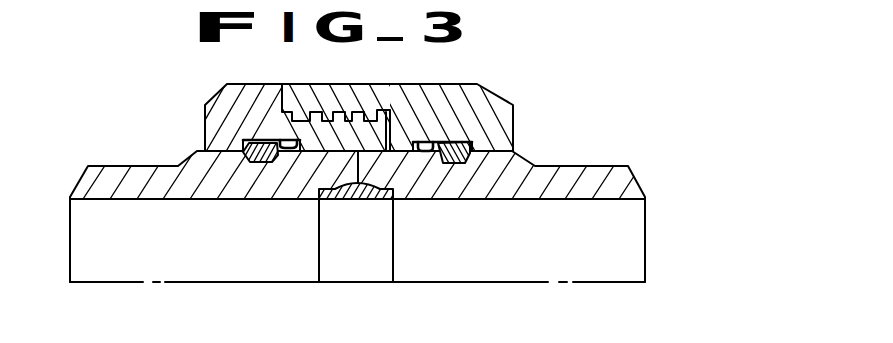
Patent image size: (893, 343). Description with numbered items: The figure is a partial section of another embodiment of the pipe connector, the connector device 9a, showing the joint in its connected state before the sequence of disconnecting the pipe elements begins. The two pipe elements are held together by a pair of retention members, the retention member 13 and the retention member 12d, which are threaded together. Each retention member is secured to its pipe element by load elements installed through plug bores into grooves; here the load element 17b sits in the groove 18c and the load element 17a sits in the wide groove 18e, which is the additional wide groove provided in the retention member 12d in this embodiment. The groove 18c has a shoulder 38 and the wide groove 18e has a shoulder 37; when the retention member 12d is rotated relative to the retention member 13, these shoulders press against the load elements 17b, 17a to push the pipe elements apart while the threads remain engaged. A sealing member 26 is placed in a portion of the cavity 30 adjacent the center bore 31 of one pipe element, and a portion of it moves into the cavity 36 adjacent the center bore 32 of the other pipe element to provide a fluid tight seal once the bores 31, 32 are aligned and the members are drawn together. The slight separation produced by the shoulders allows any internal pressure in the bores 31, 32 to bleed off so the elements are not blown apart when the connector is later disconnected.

The pipe connector device 9a is at (592, 80).
The retention member 13 is at (205, 116).
The retention member 12d is at (513, 128).
The groove 18c is at (290, 146).
The wide groove 18e is at (425, 147).
The load element 17b is at (248, 162).
The load element 17a is at (461, 153).
The shoulder 38 is at (292, 150).
The shoulder 37 is at (426, 151).
The sealing member 26 is at (364, 200).
The cavity 36 is at (343, 186).
The cavity 30 is at (378, 198).
The center bore 32 is at (135, 265).
The center bore 31 is at (605, 267).